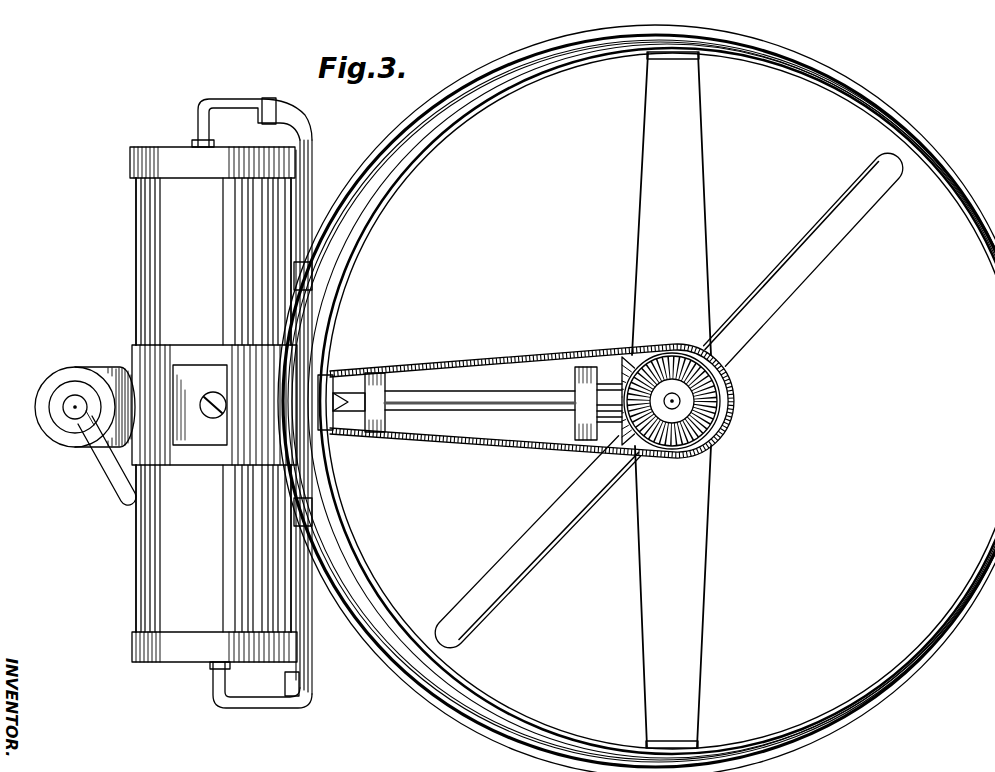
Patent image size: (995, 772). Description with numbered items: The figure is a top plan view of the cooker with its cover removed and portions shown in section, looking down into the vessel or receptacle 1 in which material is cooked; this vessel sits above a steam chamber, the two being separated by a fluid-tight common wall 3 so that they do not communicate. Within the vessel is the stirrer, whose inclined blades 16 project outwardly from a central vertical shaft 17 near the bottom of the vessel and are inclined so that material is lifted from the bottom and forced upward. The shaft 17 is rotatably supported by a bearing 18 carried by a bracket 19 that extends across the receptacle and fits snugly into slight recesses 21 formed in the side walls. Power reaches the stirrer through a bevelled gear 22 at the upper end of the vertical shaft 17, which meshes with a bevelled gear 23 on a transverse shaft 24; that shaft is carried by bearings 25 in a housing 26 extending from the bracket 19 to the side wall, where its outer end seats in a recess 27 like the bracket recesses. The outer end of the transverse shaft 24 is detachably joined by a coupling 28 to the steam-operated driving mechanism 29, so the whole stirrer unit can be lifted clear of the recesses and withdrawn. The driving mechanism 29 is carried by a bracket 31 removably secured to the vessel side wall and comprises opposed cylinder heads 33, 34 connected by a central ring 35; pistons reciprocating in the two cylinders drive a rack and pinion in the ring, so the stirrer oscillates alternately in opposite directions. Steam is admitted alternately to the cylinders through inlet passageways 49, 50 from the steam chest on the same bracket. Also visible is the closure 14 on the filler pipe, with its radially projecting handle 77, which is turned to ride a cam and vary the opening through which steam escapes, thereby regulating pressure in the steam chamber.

The vessel or receptacle 1 is at (855, 110).
The common wall 3 is at (898, 230).
The closure 14 is at (103, 360).
The inclined blades 16 is at (777, 287).
The central vertical shaft 17 is at (676, 399).
The bearing 18 is at (52, 425).
The bracket 19 is at (688, 565).
The recesses 21 is at (703, 58).
The bevelled gear 22 is at (700, 403).
The bevelled gear 23 is at (636, 366).
The transverse shaft 24 is at (463, 398).
The bearings 25 is at (372, 380).
The housing 26 is at (472, 441).
The recess 27 is at (327, 431).
The coupling 28 is at (336, 392).
The driving mechanism 29 is at (167, 139).
The bracket 31 is at (193, 372).
The cylinder head 33 is at (163, 220).
The cylinder head 34 is at (160, 554).
The central ring 35 is at (137, 355).
The inlet passageway 49 is at (311, 190).
The inlet passageway 50 is at (310, 632).
The handle 77 is at (118, 474).